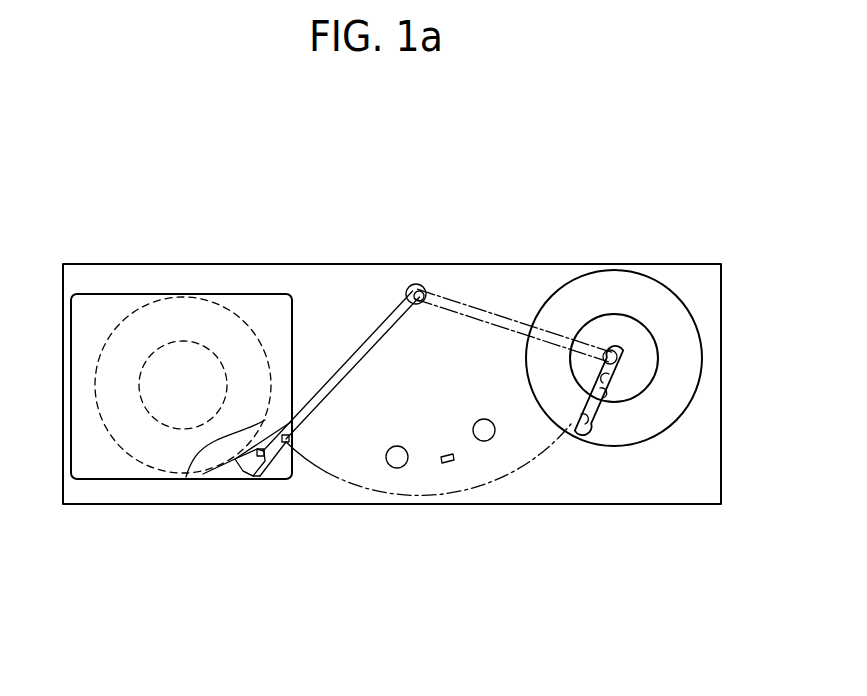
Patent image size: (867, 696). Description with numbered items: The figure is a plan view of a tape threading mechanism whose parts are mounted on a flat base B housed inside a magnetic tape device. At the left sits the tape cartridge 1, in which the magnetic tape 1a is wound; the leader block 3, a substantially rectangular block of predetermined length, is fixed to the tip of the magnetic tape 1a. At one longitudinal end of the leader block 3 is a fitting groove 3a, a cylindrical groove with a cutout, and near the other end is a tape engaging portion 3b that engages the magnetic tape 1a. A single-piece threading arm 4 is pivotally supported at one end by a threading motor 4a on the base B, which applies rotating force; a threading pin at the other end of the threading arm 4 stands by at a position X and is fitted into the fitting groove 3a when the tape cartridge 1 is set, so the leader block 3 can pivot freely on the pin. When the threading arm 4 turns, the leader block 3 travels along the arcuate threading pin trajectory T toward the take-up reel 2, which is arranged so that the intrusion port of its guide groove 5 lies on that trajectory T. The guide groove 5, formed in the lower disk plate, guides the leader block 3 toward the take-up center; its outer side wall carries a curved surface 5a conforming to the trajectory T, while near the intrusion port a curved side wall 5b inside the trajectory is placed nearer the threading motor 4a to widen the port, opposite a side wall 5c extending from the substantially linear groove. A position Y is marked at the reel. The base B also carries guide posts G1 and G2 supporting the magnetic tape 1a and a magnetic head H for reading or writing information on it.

The tape cartridge 1 is at (90, 478).
The magnetic tape 1a is at (248, 462).
The take-up reel 2 is at (572, 272).
The leader block 3 is at (244, 475).
The fitting groove 3a is at (282, 446).
The tape engaging portion 3b is at (256, 477).
The threading arm 4 is at (327, 383).
The threading motor 4a is at (410, 283).
The guide groove 5 is at (590, 350).
The curved surface 5a is at (597, 400).
The side wall 5b is at (569, 425).
The side wall 5c is at (574, 432).
The base B is at (330, 262).
The guide post G1 is at (394, 466).
The guide post G2 is at (477, 439).
The magnetic head H is at (447, 461).
The threading pin trajectory T is at (497, 480).
The standby position X is at (288, 443).
The threading pin position Y is at (612, 345).